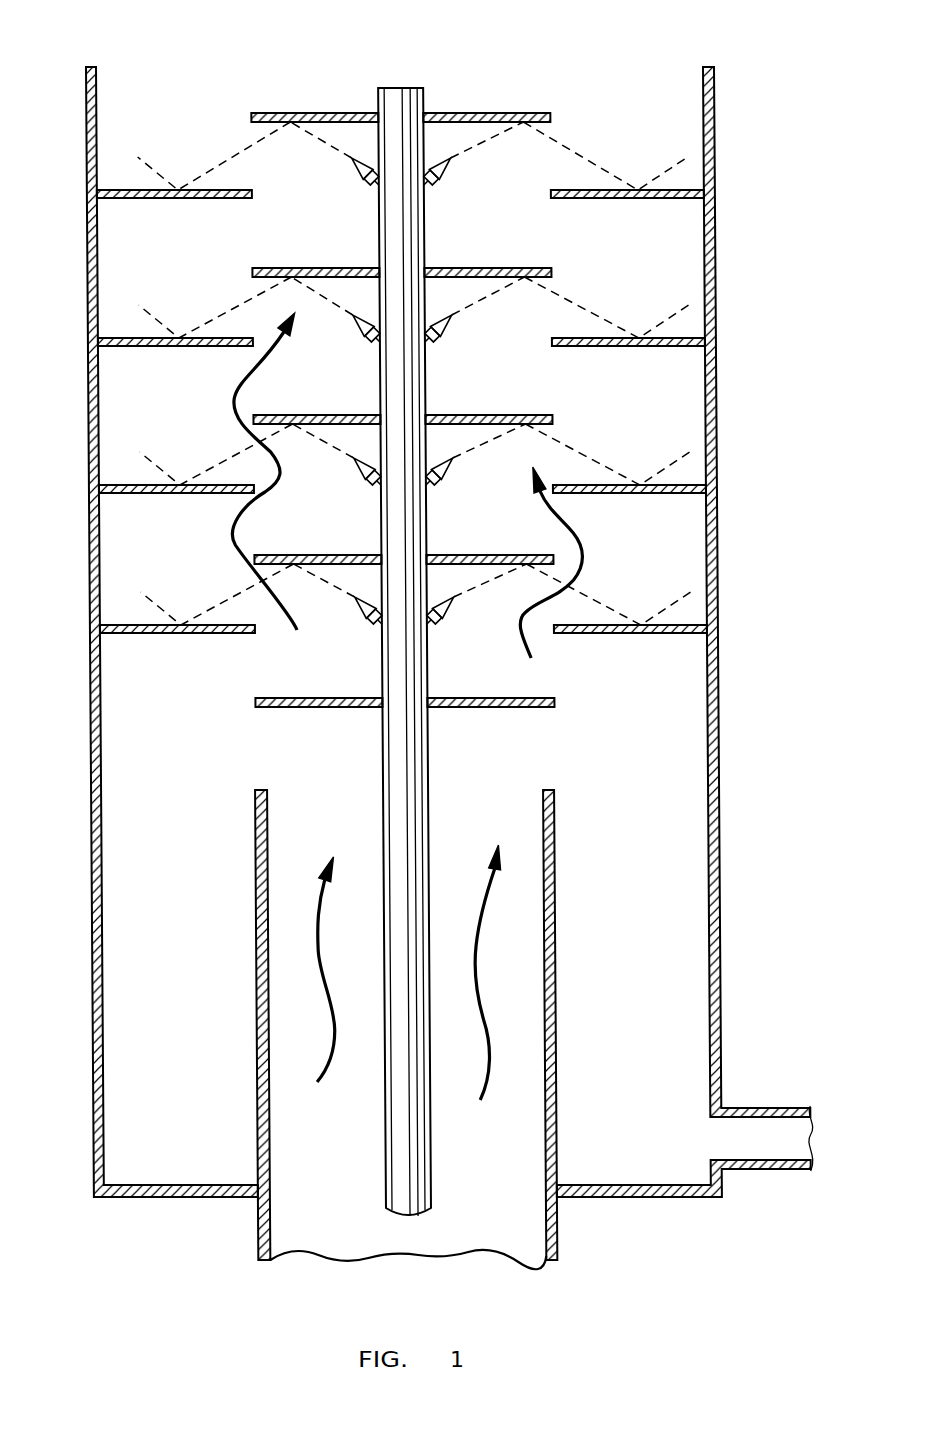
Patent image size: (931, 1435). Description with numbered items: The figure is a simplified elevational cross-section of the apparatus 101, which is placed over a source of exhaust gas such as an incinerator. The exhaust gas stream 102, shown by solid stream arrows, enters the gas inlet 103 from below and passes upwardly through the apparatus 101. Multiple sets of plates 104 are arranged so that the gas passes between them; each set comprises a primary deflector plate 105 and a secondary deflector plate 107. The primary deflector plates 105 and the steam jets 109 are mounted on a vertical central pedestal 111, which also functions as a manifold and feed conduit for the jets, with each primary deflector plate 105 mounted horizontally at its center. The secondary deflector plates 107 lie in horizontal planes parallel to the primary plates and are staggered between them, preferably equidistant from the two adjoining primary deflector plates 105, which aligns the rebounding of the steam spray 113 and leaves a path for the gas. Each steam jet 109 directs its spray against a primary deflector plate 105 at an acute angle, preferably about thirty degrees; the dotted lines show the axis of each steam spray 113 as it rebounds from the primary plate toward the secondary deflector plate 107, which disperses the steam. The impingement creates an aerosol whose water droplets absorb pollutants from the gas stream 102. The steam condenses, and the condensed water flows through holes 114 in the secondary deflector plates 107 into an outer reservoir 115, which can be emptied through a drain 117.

The apparatus 101 is at (718, 540).
The exhaust gas stream 102 is at (263, 367).
The gas inlet 103 is at (487, 1217).
The sets of plates 104 is at (688, 165).
The primary deflector plate 105 is at (507, 113).
The secondary deflector plate 107 is at (617, 198).
The steam jets 109 is at (453, 173).
The central pedestal 111 is at (407, 87).
The steam spray 113 is at (490, 143).
The holes 114 is at (137, 198).
The outer reservoir 115 is at (667, 840).
The drain 117 is at (777, 1107).